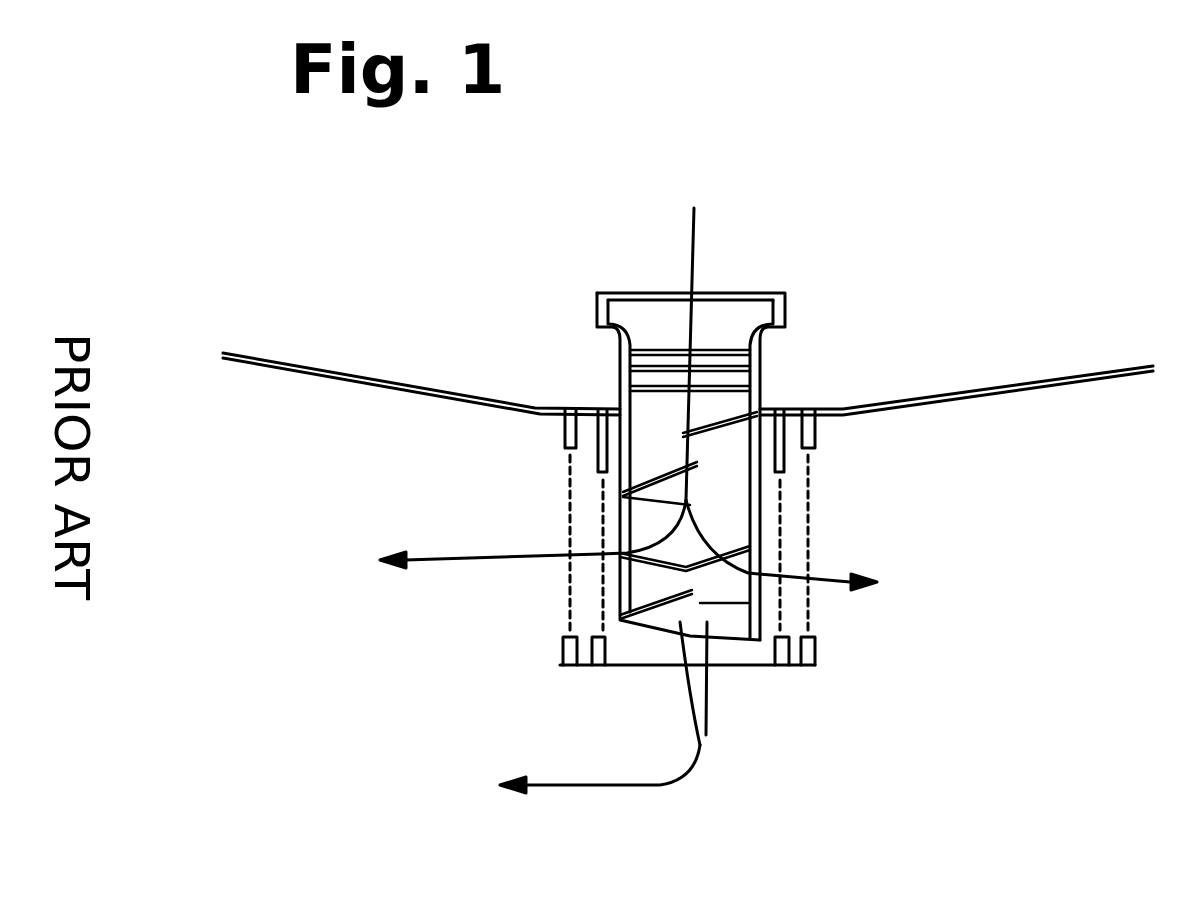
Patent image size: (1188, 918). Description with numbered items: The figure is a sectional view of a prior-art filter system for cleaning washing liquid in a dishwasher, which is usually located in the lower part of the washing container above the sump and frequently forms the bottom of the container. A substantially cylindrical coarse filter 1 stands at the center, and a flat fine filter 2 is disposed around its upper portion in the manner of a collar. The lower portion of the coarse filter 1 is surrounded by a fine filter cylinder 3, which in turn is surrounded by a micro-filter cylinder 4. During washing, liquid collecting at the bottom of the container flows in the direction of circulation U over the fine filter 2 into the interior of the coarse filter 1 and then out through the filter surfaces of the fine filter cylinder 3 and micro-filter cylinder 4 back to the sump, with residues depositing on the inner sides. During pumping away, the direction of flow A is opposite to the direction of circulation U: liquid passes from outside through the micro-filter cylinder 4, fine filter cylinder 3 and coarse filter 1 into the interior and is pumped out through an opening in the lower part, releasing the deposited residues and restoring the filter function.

The coarse filter 1 is at (787, 347).
The fine filter 2 is at (950, 390).
The fine filter cylinder 3 is at (782, 495).
The micro-filter cylinder 4 is at (815, 605).
The direction of circulation U is at (625, 545).
The direction of flow A is at (592, 716).